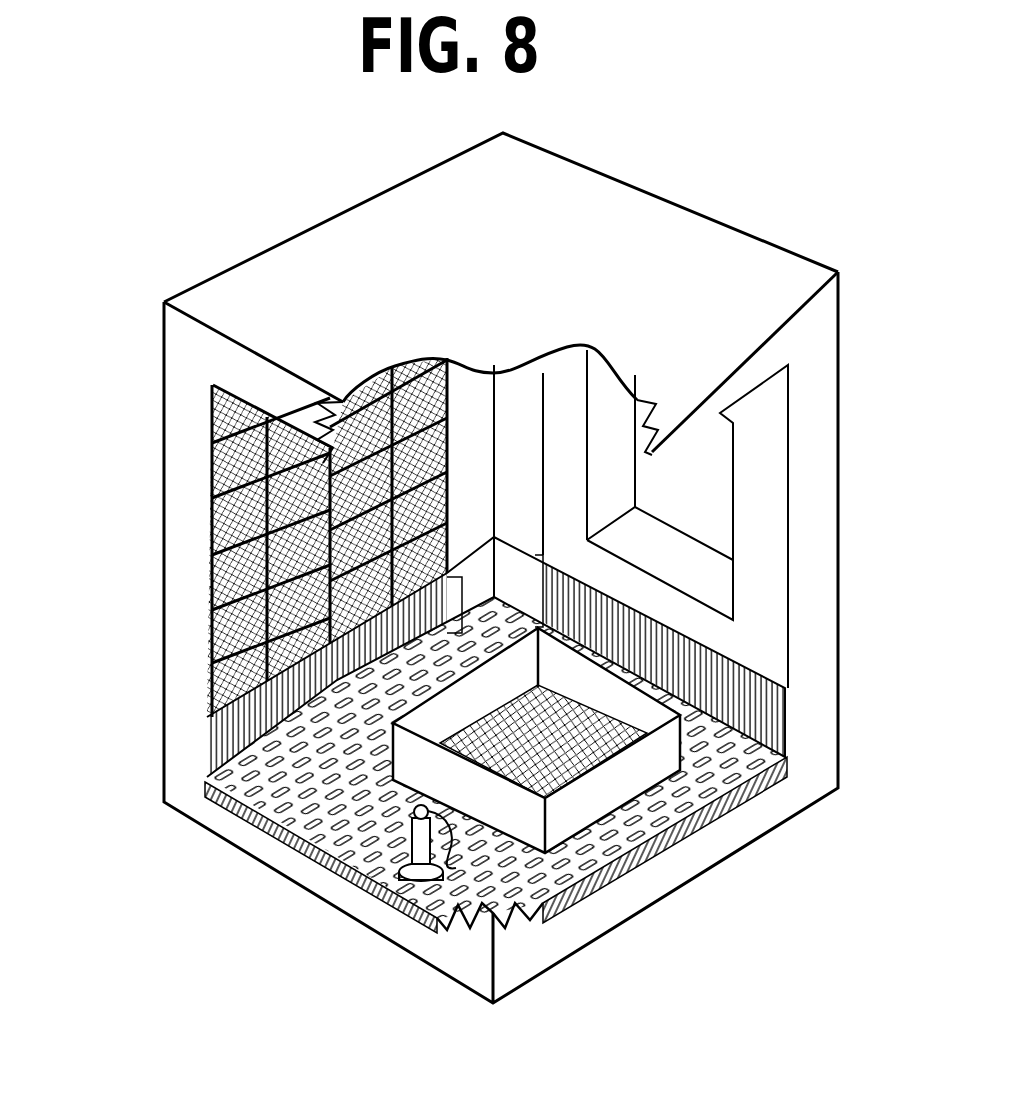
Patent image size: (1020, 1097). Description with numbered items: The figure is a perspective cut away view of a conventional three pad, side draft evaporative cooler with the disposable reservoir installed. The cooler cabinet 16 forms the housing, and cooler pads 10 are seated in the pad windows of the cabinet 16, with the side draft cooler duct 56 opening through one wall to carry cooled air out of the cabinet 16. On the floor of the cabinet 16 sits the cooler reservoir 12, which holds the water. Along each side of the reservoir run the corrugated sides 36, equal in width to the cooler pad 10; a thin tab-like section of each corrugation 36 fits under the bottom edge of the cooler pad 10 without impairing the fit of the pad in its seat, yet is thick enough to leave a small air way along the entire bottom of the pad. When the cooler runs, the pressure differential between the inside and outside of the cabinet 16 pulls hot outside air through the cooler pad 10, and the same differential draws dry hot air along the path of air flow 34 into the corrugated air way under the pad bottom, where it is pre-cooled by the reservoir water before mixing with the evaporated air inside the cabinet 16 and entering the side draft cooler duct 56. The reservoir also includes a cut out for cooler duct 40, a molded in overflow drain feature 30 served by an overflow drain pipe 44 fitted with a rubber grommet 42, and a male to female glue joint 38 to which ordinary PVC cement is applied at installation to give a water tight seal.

The cooler pad 10 is at (217, 460).
The cooler reservoir 12 is at (535, 757).
The cooler cabinet 16 is at (505, 222).
The molded in overflow drain feature 30 is at (400, 880).
The path of air flow 34 is at (162, 578).
The corrugated sides 36 is at (245, 737).
The male to female glue joint 38 is at (790, 760).
The cut out for cooler duct 40 is at (557, 842).
The rubber grommet 42 is at (352, 853).
The overflow drain pipe 44 is at (397, 867).
The side draft cooler duct 56 is at (703, 577).